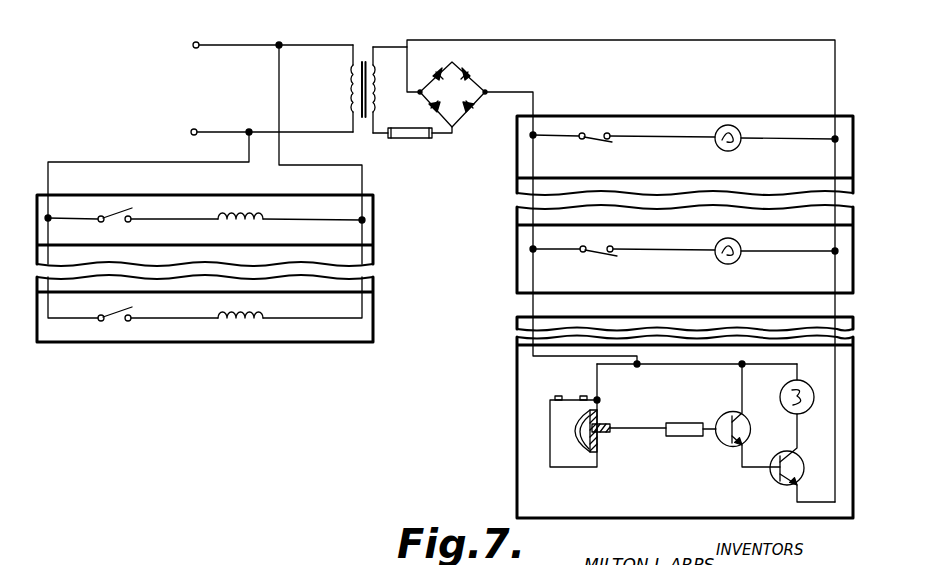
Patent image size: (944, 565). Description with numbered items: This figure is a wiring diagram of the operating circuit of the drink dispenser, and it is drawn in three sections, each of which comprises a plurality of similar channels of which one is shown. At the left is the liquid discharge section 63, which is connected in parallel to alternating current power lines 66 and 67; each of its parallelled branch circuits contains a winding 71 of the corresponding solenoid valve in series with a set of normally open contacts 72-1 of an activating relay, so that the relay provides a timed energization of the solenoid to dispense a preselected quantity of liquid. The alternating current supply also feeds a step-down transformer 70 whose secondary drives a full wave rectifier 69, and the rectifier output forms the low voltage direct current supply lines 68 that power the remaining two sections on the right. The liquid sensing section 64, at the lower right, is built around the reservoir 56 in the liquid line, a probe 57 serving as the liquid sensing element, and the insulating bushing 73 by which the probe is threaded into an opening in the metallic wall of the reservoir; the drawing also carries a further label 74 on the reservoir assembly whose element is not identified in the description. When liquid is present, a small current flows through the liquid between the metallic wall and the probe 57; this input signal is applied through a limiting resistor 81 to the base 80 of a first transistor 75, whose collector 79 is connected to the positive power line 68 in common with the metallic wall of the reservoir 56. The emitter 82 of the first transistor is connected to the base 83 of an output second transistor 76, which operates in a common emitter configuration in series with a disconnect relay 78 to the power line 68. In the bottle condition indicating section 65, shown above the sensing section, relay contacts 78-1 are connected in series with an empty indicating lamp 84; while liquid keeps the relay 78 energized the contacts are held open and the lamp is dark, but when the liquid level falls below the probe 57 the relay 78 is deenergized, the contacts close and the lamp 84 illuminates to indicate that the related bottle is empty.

The reservoir 56 is at (551, 462).
The probe 57 is at (592, 448).
The liquid discharge section 63 is at (373, 275).
The liquid sensing section 64 is at (517, 338).
The bottle condition indicating section 65 is at (517, 208).
The alternating current power line 66 is at (277, 84).
The alternating current power line 67 is at (247, 150).
The direct current supply lines 68 is at (510, 40).
The full wave rectifier 69 is at (460, 103).
The step-down transformer 70 is at (362, 58).
The winding 71 is at (234, 210).
The normally open contacts 72-1 is at (136, 180).
The insulating bushing 73 is at (609, 426).
The hatched contact member 74 is at (578, 416).
The first transistor 75 is at (717, 414).
The second transistor 76 is at (772, 488).
The disconnect relay 78 is at (827, 370).
The relay contacts 78-1 is at (596, 140).
The collector 79 is at (752, 412).
The base 80 is at (720, 442).
The limiting resistor 81 is at (677, 437).
The emitter 82 is at (737, 450).
The base 83 is at (783, 456).
The empty indicating lamp 84 is at (726, 126).